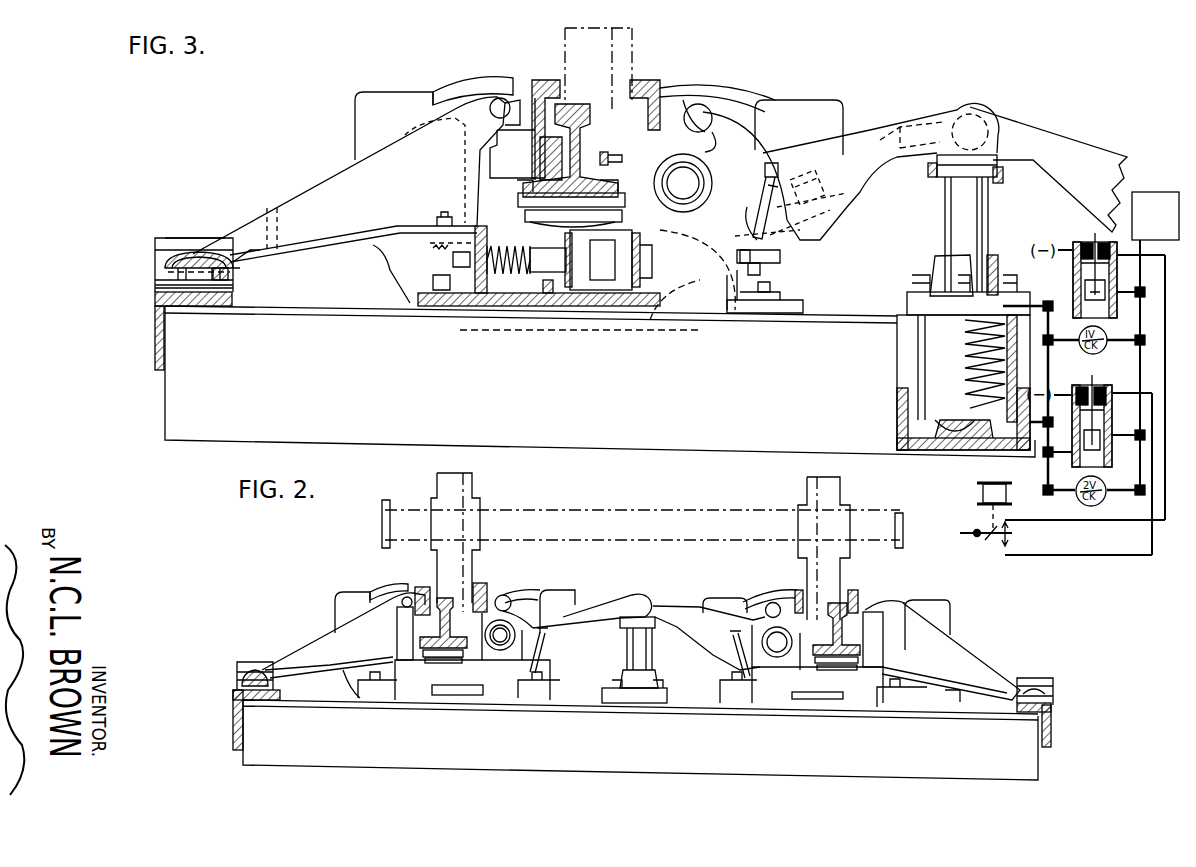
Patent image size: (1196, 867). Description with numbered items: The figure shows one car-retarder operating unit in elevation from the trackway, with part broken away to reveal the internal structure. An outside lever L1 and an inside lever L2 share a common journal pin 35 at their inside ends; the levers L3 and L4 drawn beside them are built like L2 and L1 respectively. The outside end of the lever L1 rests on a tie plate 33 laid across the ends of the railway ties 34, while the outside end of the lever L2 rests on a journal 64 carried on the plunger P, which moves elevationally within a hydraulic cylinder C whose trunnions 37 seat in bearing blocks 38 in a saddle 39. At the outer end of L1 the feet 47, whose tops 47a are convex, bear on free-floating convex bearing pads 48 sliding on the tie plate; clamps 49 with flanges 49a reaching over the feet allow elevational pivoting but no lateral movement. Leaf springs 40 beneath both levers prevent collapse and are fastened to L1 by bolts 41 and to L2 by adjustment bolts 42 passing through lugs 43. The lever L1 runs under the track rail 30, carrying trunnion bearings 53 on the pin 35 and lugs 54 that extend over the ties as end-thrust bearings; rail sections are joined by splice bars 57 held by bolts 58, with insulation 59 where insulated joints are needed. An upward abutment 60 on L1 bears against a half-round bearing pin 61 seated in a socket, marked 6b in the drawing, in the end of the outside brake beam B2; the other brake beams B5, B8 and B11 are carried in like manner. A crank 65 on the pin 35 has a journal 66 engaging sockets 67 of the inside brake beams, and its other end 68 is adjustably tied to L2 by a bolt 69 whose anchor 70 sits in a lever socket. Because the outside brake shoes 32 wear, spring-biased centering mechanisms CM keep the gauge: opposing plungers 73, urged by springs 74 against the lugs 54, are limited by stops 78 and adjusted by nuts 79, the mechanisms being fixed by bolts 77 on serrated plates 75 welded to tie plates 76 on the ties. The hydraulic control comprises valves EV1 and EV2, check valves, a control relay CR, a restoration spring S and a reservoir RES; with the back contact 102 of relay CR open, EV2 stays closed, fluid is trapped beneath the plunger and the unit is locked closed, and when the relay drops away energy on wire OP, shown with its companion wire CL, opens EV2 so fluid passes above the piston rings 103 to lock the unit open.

In FIG. 3, the track rail 30 is at (590, 118).
In FIG. 2, the track rail 30 is at (640, 634).
In FIG. 3, the outside brake shoes 32 is at (540, 80).
In FIG. 2, the outside brake shoes 32 is at (805, 578).
In FIG. 3, the tie plates 33 is at (155, 297).
In FIG. 2, the tie plates 33 is at (233, 718).
In FIG. 3, the railway ties 34 is at (170, 392).
In FIG. 2, the railway ties 34 is at (922, 778).
In FIG. 3, the journal pin 35 is at (690, 180).
In FIG. 2, the journal pin 35 is at (500, 650).
In FIG. 3, the trunnions 37 is at (955, 414).
In FIG. 3, the bearing blocks 38 is at (950, 450).
In FIG. 3, the saddle 39 is at (897, 398).
In FIG. 3, the leaf springs 40 is at (774, 257).
In FIG. 3, the bolts 41 is at (440, 214).
In FIG. 3, the adjustment bolts 42 is at (780, 170).
In FIG. 3, the lugs 43 is at (750, 213).
In FIG. 3, the feet 47 is at (166, 265).
In FIG. 2, the feet 47 is at (242, 684).
In FIG. 3, the top of foot 47a is at (243, 258).
In FIG. 3, the bearing pads 48 is at (228, 274).
In FIG. 3, the clamps 49 is at (155, 243).
In FIG. 2, the clamps 49 is at (237, 668).
In FIG. 3, the flanges 49a is at (193, 238).
In FIG. 3, the trunnion bearings 53 is at (664, 154).
In FIG. 3, the lugs 54 is at (620, 292).
In FIG. 3, the splice bars 57 is at (517, 185).
In FIG. 3, the bolts 58 is at (606, 152).
In FIG. 3, the insulation 59 is at (538, 131).
In FIG. 2, the insulation 59 is at (640, 637).
In FIG. 3, the abutment 60 is at (470, 92).
In FIG. 2, the abutment 60 is at (395, 595).
In FIG. 3, the half-round bearing pin 61 is at (497, 98).
In FIG. 2, the half-round bearing pin 61 is at (408, 596).
In FIG. 3, the pivot member 6b is at (508, 102).
In FIG. 3, the journal 64 is at (1000, 170).
In FIG. 3, the crank 65 is at (764, 152).
In FIG. 3, the journal 66 is at (700, 112).
In FIG. 2, the journal 66 is at (503, 595).
In FIG. 3, the sockets 67 is at (684, 108).
In FIG. 3, the other end of crank 68 is at (760, 280).
In FIG. 3, the bolt 69 is at (818, 178).
In FIG. 3, the anchor 70 is at (826, 212).
In FIG. 3, the plungers 73 is at (548, 296).
In FIG. 3, the springs 74 is at (500, 292).
In FIG. 3, the serrated plates 75 is at (425, 312).
In FIG. 3, the tie plates 76 is at (292, 316).
In FIG. 3, the bolts 77 is at (433, 282).
In FIG. 3, the stops 78 is at (538, 276).
In FIG. 3, the nuts 79 is at (452, 258).
In FIG. 3, the back contact 102 is at (988, 536).
In FIG. 3, the piston rings 103 is at (1030, 304).
In FIG. 3, the outside brake beam B2 is at (388, 90).
In FIG. 2, the outside brake beam B2 is at (345, 590).
In FIG. 3, the bracket B5 is at (786, 100).
In FIG. 2, the bracket B5 is at (566, 585).
In FIG. 2, the bracket B8 is at (722, 610).
In FIG. 2, the bracket B11 is at (915, 606).
In FIG. 3, the outside lever L1 is at (305, 190).
In FIG. 2, the outside lever L1 is at (320, 636).
In FIG. 3, the inside lever L2 is at (876, 128).
In FIG. 2, the inside lever L2 is at (598, 612).
In FIG. 3, the lever L3 is at (1092, 130).
In FIG. 2, the lever L3 is at (676, 612).
In FIG. 2, the lever L4 is at (975, 655).
In FIG. 3, the piston P is at (946, 215).
In FIG. 2, the piston P is at (652, 650).
In FIG. 3, the cylinder C is at (918, 352).
In FIG. 3, the restoration spring S is at (1010, 348).
In FIG. 3, the centering mechanisms CM is at (690, 296).
In FIG. 2, the centering mechanisms CM is at (416, 690).
In FIG. 3, the control relay CR is at (994, 495).
In FIG. 3, the close line CL is at (1085, 509).
In FIG. 3, the wire OP is at (1078, 565).
In FIG. 3, the electrically operable hydraulic control valve EV1 is at (1082, 242).
In FIG. 3, the electrically operable hydraulic control valve EV2 is at (1108, 380).
In FIG. 3, the reservoir RES is at (1155, 373).